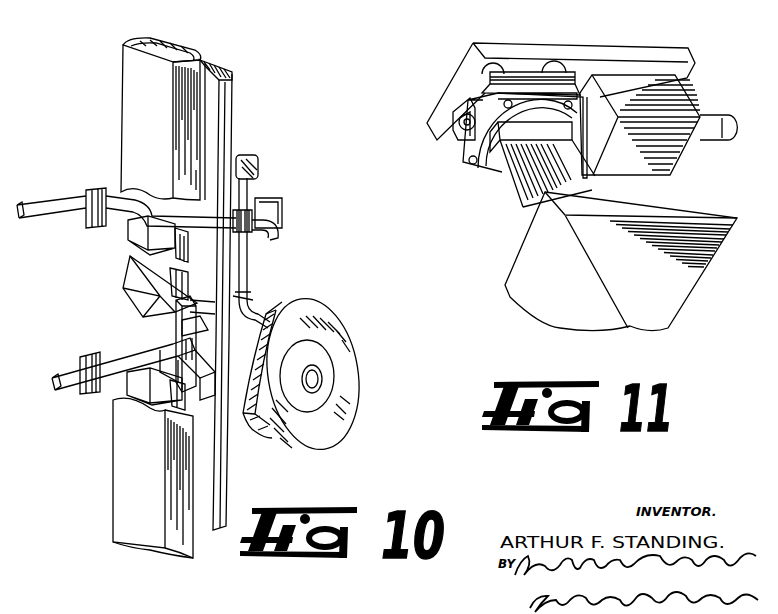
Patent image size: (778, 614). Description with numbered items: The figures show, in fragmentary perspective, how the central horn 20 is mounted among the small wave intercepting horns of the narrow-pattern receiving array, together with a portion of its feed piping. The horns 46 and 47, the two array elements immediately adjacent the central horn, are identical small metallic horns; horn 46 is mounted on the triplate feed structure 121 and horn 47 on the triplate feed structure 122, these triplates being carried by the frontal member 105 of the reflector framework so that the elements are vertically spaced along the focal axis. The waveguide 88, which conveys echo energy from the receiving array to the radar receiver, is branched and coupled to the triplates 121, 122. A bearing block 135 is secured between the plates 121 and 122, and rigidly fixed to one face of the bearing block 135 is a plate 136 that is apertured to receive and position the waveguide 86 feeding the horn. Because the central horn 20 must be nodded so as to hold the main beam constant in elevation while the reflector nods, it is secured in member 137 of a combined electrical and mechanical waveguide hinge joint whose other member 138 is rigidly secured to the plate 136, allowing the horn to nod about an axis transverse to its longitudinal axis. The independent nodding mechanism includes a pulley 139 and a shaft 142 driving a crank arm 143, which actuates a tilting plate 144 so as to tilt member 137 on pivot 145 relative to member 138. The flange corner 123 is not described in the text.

In FIG. 10, the frontal member 105 is at (127, 100).
In FIG. 10, the flange corner of channel 123 is at (222, 63).
In FIG. 10, the triplate feed structure 121 is at (232, 107).
In FIG. 10, the triplate feed structure 122 is at (220, 473).
In FIG. 10, the waveguide 86 is at (250, 252).
In FIG. 10, the horn 46 is at (130, 235).
In FIG. 10, the central horn 20 is at (123, 280).
In FIG. 11, the central horn 20 is at (695, 295).
In FIG. 10, the waveguide 88 is at (115, 357).
In FIG. 10, the horn 47 is at (123, 390).
In FIG. 10, the pulley 139 is at (328, 430).
In FIG. 10, the bearing block 135 is at (250, 323).
In FIG. 11, the bearing block 135 is at (677, 150).
In FIG. 11, the plate 136 is at (660, 43).
In FIG. 11, the member of waveguide hinge joint 137 is at (520, 93).
In FIG. 11, the member of waveguide hinge joint 138 is at (532, 77).
In FIG. 11, the shaft 142 is at (710, 117).
In FIG. 11, the crank arm 143 is at (580, 178).
In FIG. 11, the tilting plate 144 is at (480, 172).
In FIG. 11, the pivot 145 is at (466, 128).